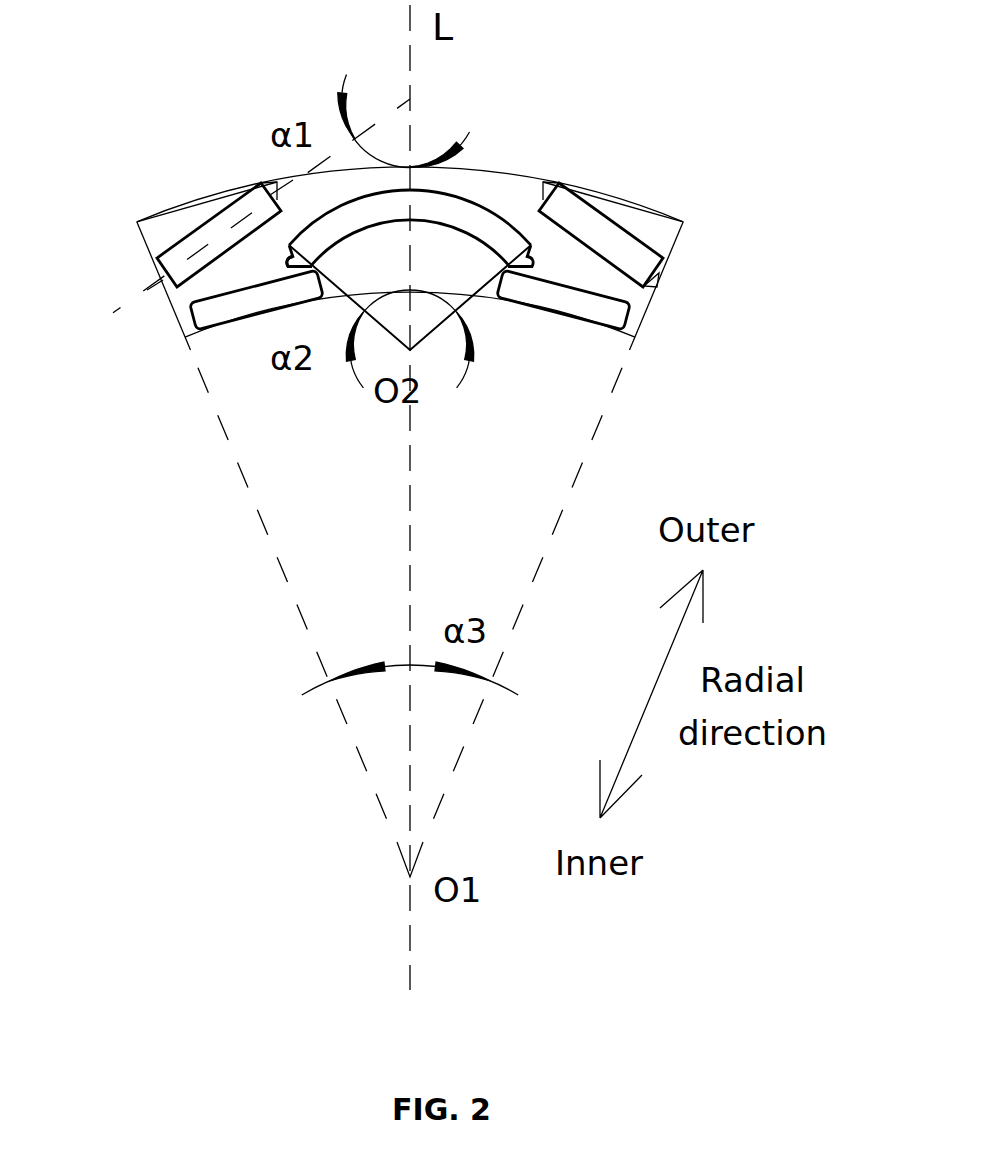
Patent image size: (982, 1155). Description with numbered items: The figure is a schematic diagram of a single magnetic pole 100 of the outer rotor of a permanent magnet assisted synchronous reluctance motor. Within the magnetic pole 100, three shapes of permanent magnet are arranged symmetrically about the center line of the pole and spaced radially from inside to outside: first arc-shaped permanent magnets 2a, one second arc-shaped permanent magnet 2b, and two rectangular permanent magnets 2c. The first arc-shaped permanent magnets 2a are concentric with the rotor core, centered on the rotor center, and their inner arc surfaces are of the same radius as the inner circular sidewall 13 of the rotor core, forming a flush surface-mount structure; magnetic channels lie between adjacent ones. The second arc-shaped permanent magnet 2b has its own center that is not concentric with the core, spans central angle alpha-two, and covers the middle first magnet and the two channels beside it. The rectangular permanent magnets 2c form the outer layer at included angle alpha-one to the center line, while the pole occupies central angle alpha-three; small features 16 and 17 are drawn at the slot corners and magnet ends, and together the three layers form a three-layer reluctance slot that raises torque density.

The first arc-shaped permanent magnet 2a is at (208, 312).
The second arc-shaped permanent magnet 2b is at (465, 218).
The rectangular permanent magnet 2c is at (212, 233).
The inner circular sidewall 13 is at (473, 295).
The flux barrier 16 is at (548, 187).
The notch 17 is at (291, 263).
The magnetic pole 100 is at (277, 577).